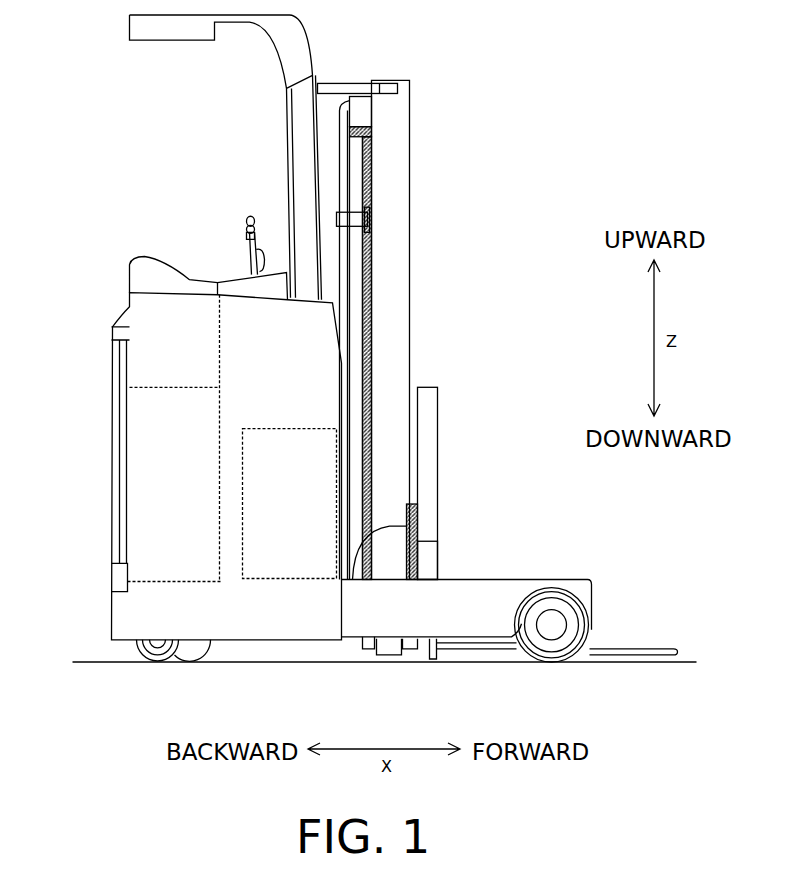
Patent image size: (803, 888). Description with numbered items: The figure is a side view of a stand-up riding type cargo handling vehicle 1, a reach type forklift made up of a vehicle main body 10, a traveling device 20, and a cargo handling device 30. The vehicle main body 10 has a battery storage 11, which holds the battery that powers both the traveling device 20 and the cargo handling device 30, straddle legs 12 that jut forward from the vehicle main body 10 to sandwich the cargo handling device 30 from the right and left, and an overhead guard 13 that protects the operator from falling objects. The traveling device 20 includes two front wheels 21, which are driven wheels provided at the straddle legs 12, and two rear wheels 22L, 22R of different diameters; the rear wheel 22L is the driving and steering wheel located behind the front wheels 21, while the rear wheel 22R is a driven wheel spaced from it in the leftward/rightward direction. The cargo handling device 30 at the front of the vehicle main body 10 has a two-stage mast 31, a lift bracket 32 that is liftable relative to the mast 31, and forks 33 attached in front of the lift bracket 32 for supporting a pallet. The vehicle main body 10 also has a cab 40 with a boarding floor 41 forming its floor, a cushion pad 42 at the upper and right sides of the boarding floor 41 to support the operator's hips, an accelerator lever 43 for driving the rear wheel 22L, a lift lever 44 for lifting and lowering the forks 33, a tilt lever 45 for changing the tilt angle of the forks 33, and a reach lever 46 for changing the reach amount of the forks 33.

The cargo handling vehicle 1 is at (566, 31).
The vehicle main body 10 is at (199, 489).
The battery storage 11 is at (298, 582).
The straddle legs 12 is at (481, 578).
The overhead guard 13 is at (160, 33).
The traveling device 20 is at (314, 649).
The front wheels 21 is at (526, 663).
The rear wheel 22R is at (148, 665).
The rear wheel 22L is at (207, 665).
The cargo handling device 30 is at (498, 367).
The mast 31 is at (403, 204).
The lift bracket 32 is at (425, 505).
The forks 33 is at (617, 647).
The cab 40 is at (177, 384).
The boarding floor 41 is at (110, 568).
The cushion pad 42 is at (132, 278).
The accelerator lever 43 is at (257, 238).
The lift lever 44 is at (247, 219).
The tilt lever 45 is at (247, 230).
The reach lever 46 is at (247, 237).